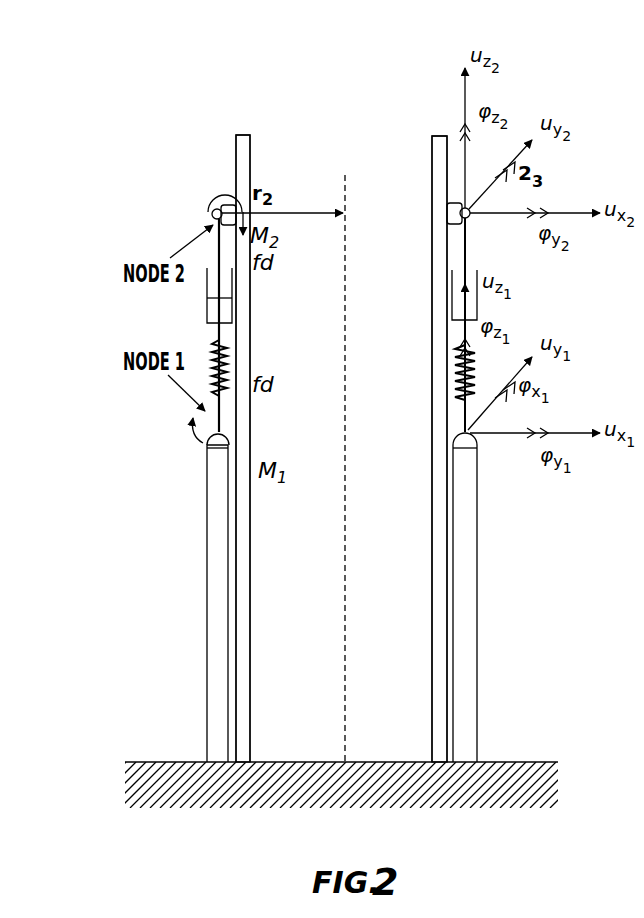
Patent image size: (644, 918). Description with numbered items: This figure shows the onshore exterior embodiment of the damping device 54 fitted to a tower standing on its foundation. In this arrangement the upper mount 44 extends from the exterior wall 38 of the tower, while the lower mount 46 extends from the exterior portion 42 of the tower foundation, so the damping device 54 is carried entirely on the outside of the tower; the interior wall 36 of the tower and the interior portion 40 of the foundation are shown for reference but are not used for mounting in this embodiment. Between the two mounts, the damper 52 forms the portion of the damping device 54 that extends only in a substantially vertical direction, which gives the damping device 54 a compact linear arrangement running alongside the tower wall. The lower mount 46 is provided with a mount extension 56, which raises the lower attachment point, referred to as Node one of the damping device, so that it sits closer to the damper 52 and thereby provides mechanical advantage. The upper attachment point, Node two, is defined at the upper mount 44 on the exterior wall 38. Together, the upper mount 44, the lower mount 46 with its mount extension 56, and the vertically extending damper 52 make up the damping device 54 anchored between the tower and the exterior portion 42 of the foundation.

The interior wall 36 is at (245, 559).
The exterior wall 38 is at (235, 160).
The interior portion of the tower foundation 40 is at (369, 762).
The exterior portion of the tower foundation 42 is at (150, 765).
The upper mount 44 is at (212, 207).
The lower mount 46 is at (225, 440).
The damper 52 is at (232, 312).
The damping device 54 is at (117, 433).
The mount extension 56 is at (216, 596).